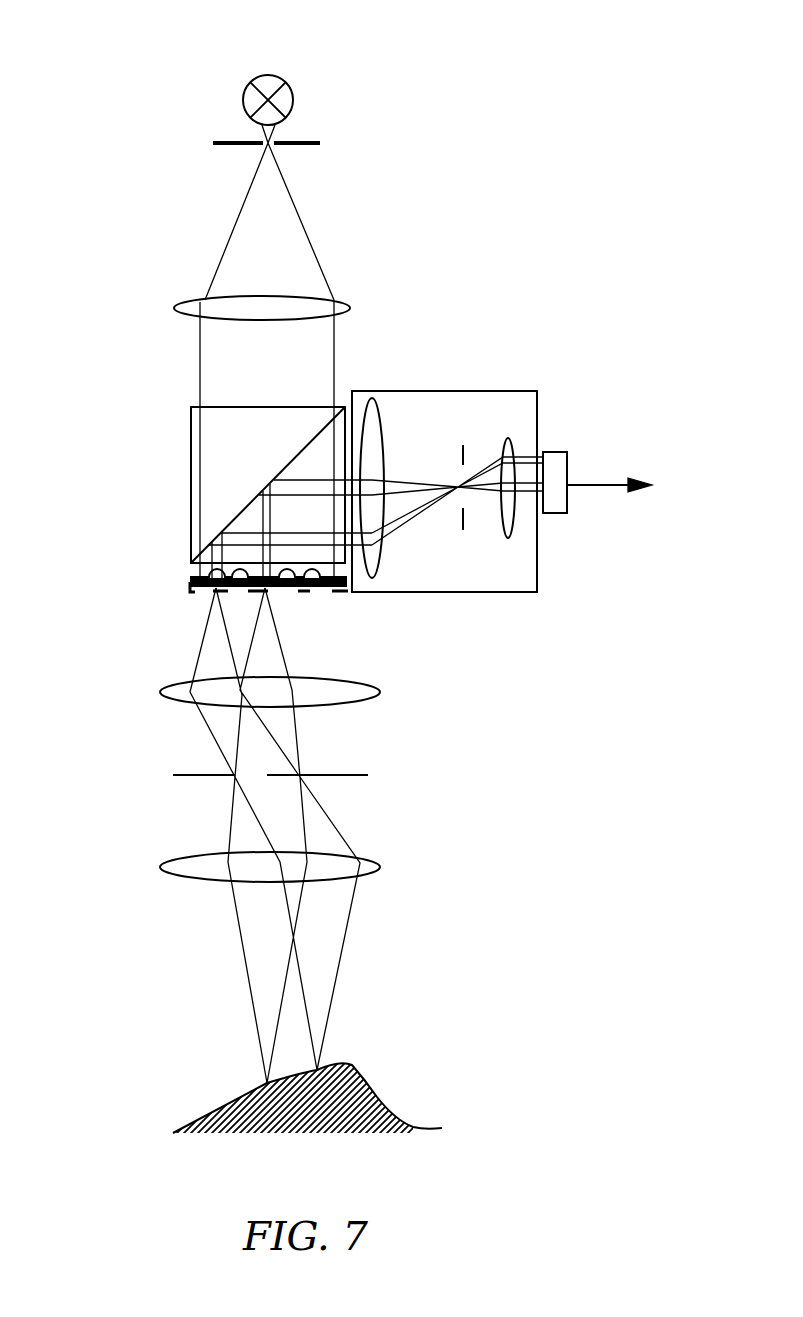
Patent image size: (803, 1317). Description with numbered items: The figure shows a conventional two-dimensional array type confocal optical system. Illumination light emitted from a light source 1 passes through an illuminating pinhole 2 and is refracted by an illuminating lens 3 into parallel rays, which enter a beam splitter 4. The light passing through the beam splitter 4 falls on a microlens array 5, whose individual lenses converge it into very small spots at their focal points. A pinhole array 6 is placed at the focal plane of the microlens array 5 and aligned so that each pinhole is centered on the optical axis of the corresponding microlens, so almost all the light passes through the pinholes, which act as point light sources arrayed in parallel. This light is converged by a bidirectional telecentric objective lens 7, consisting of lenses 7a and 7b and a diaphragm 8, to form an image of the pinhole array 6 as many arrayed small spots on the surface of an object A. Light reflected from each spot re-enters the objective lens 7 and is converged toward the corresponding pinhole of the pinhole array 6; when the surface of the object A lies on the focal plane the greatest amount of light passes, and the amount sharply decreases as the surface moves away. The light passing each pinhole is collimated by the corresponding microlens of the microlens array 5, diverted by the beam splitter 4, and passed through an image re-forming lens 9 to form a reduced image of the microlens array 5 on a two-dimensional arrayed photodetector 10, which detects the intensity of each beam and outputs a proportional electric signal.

The light source 1 is at (277, 82).
The illuminating pinhole 2 is at (310, 140).
The illuminating lens 3 is at (305, 307).
The beam splitter 4 is at (213, 445).
The microlens array 5 is at (197, 560).
The pinhole array 6 is at (195, 583).
The bidirectional telecentric objective lens 7 is at (68, 592).
The lens 7a is at (185, 698).
The diaphragm 8 is at (183, 775).
The lens 7b is at (182, 868).
The image re-forming lens 9 is at (403, 593).
The two-dimensional arrayed photodetector 10 is at (555, 477).
The object A is at (367, 1107).